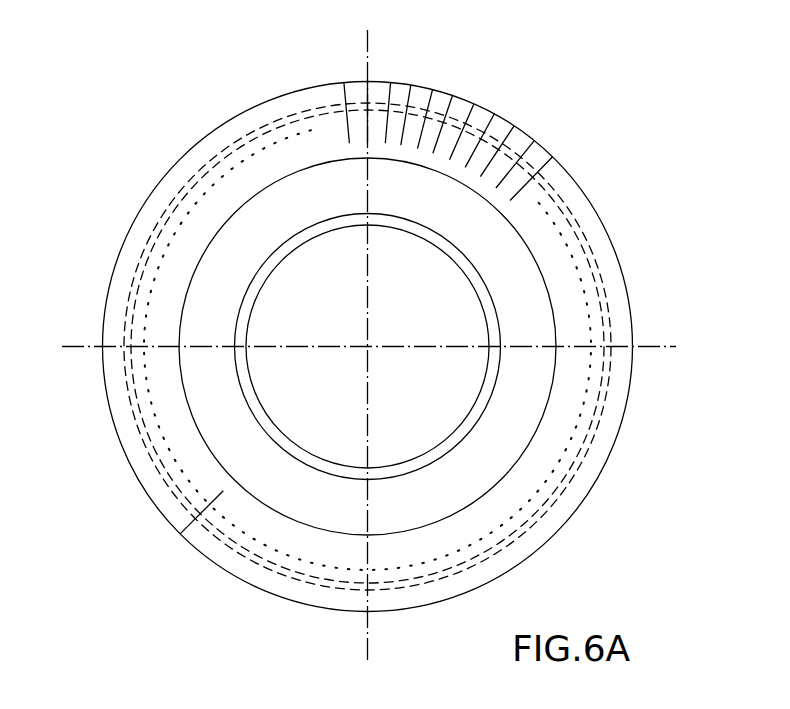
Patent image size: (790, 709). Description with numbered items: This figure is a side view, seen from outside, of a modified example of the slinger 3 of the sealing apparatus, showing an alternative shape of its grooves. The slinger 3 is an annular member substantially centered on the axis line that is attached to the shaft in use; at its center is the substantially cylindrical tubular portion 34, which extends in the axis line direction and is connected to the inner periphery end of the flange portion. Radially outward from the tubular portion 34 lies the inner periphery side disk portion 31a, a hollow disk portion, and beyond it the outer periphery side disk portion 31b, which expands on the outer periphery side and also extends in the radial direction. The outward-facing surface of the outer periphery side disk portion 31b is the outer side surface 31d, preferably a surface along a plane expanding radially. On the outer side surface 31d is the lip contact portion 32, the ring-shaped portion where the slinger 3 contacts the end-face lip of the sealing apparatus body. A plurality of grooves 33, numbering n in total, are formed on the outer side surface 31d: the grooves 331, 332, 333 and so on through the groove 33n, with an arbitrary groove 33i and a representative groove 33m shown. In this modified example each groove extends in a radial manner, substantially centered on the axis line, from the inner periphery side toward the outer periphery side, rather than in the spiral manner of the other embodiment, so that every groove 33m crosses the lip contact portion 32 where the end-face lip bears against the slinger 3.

The slinger 3 is at (576, 74).
The inner periphery side disk portion 31a is at (240, 443).
The outer periphery side disk portion 31b is at (599, 206).
The outer side surface 31d is at (611, 271).
The lip contact portion 32 is at (604, 398).
The grooves 33 is at (477, 53).
The groove 331 is at (370, 92).
The groove 332 is at (393, 94).
The groove 333 is at (414, 98).
The groove 33i is at (538, 165).
The groove 33m is at (190, 524).
The groove 33n is at (345, 97).
The tubular portion 34 is at (283, 250).